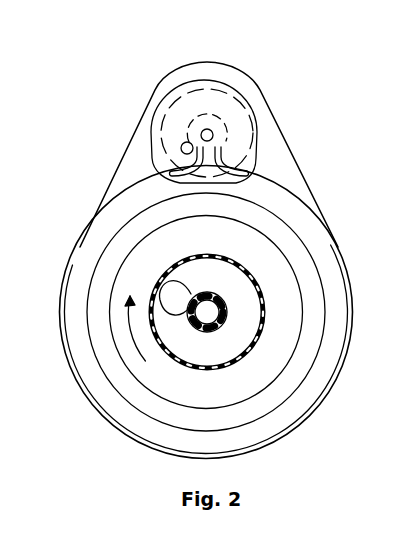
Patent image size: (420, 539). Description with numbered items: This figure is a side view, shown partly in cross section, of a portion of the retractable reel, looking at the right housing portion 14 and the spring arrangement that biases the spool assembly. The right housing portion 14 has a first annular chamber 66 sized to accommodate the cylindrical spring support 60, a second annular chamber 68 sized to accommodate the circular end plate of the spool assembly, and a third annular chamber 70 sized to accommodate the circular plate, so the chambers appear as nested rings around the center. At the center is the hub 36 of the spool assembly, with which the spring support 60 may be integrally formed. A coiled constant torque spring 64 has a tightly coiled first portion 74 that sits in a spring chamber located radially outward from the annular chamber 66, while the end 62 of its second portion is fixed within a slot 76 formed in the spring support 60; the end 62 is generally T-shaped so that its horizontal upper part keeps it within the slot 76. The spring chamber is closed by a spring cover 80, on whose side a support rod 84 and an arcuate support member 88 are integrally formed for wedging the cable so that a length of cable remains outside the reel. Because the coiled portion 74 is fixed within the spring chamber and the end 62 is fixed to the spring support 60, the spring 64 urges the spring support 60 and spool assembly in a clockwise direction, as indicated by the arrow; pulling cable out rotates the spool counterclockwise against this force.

The right housing portion 14 is at (309, 163).
The central hub 36 is at (177, 279).
The spring support 60 is at (172, 348).
The end of spring 62 is at (248, 266).
The coiled constant torque spring 64 is at (212, 61).
The first annular chamber 66 is at (220, 390).
The second annular chamber 68 is at (312, 293).
The third annular chamber 70 is at (330, 271).
The first portion of spring 74 is at (142, 132).
The slot 76 is at (246, 356).
The spring cover 80 is at (167, 91).
The support rod 84 is at (200, 73).
The arcuate support member 88 is at (183, 258).